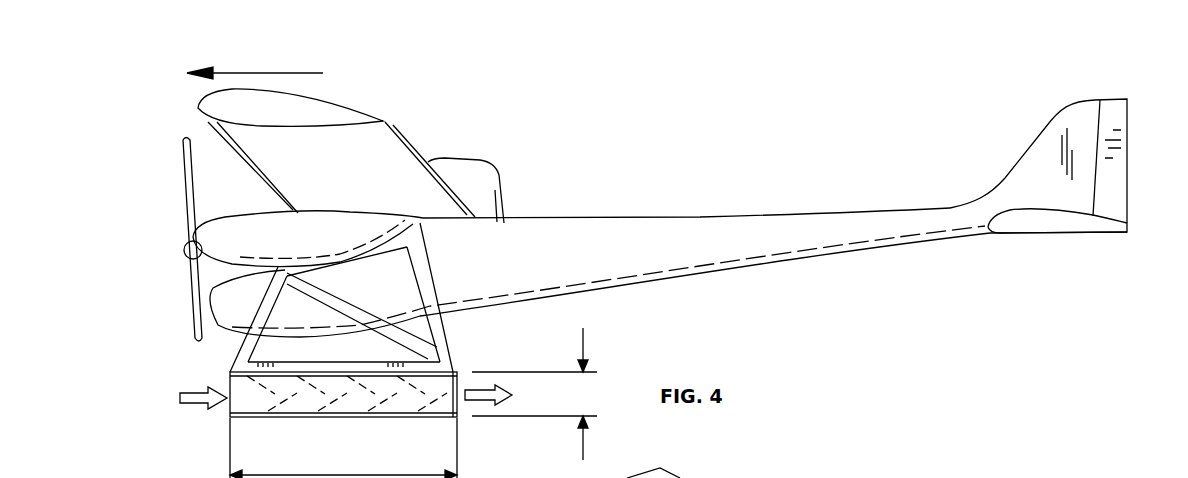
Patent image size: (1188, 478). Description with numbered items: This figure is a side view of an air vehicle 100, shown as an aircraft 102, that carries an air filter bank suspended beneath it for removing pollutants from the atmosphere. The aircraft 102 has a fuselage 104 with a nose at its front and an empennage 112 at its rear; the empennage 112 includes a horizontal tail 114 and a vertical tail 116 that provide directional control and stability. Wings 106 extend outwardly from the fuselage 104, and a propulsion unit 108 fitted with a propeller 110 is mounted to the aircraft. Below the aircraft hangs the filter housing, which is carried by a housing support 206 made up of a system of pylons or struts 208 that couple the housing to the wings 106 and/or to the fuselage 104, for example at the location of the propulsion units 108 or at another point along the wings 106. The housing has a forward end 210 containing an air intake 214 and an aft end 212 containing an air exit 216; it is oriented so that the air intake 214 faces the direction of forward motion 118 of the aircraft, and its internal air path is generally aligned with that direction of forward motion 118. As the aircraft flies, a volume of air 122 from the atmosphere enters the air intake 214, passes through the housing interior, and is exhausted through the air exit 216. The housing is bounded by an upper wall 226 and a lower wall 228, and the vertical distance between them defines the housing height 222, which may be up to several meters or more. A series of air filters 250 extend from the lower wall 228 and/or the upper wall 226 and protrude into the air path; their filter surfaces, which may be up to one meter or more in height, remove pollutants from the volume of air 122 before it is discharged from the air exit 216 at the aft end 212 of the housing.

The air vehicle 100 is at (680, 139).
The aircraft 102 is at (740, 207).
The fuselage 104 is at (588, 218).
The wings 106 is at (466, 168).
The propulsion units 108 is at (184, 243).
The propeller 110 is at (183, 173).
The empennage 112 is at (1003, 137).
The horizontal tail 114 is at (1030, 223).
The vertical tail 116 is at (1066, 110).
The direction of forward motion 118 is at (278, 73).
The volume of air 122 is at (181, 398).
The housing support 206 is at (462, 353).
The struts 208 is at (246, 354).
The forward end 210 is at (224, 416).
The aft end 212 is at (451, 428).
The air intake 214 is at (222, 374).
The air exit 216 is at (468, 416).
The housing height 222 is at (586, 334).
The upper wall 226 is at (343, 370).
The lower wall 228 is at (340, 428).
The air filters 250 is at (290, 418).